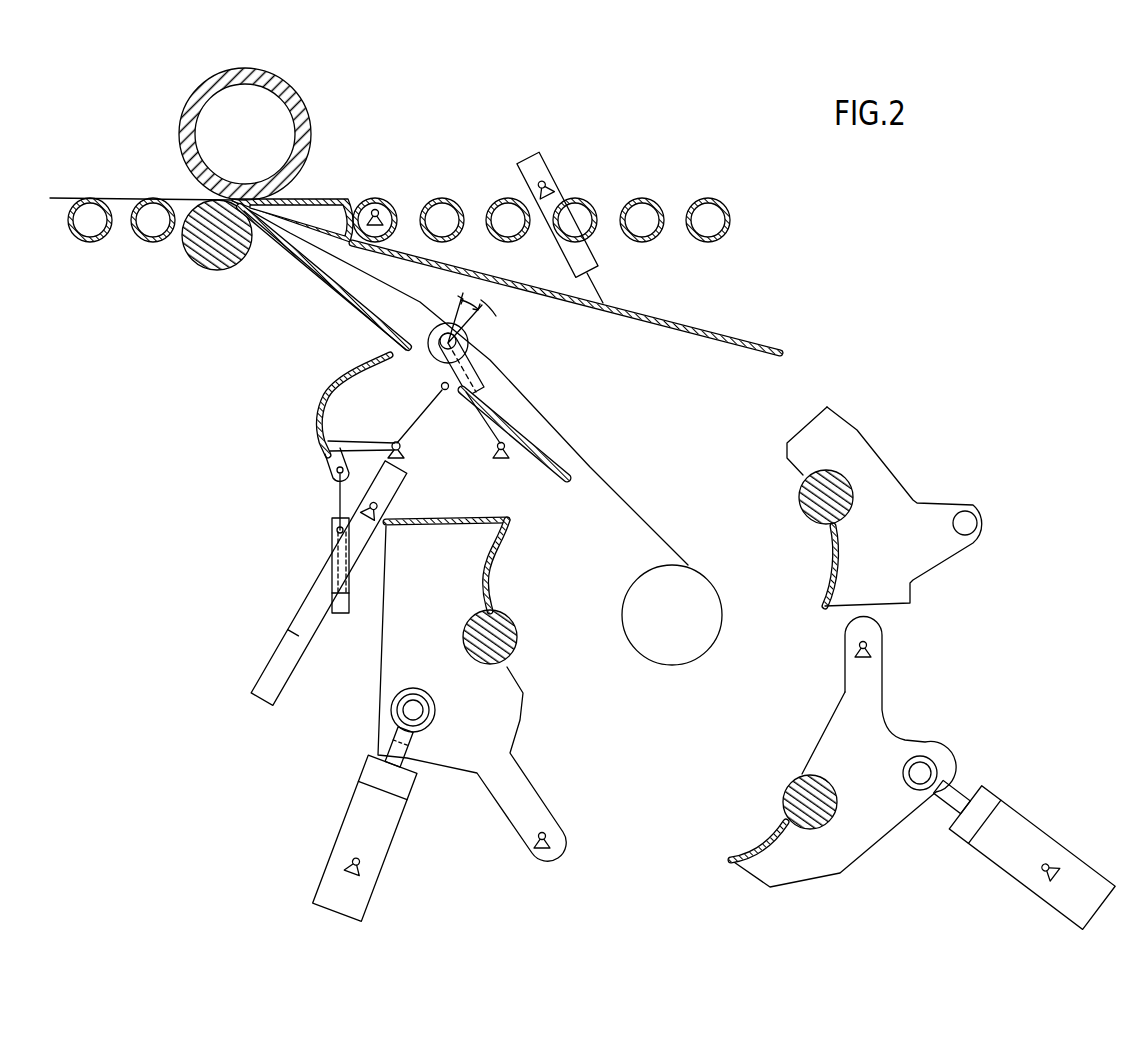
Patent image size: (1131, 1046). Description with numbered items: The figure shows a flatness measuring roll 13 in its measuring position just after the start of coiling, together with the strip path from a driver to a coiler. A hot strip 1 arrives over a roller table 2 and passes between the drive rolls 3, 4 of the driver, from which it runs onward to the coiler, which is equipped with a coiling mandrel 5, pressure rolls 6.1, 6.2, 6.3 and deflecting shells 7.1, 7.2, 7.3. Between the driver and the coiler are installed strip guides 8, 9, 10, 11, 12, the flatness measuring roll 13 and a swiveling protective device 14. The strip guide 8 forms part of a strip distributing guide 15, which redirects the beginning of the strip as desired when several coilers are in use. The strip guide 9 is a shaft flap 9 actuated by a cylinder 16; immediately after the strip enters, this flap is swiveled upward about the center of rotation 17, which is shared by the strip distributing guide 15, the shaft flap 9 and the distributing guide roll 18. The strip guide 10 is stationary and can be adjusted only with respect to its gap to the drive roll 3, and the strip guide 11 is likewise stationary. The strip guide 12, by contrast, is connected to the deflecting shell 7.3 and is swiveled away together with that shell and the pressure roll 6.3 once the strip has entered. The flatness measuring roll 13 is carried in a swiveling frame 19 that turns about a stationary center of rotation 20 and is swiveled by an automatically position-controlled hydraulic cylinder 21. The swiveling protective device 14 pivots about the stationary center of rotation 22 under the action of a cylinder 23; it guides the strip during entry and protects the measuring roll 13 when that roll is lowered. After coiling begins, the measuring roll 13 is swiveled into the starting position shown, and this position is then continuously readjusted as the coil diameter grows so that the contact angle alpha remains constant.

The hot strip 1 is at (60, 197).
The roller table 2 is at (90, 242).
The drive roll 3 is at (207, 255).
The drive roll 4 is at (299, 94).
The coiling mandrel 5 is at (655, 642).
The pressure roll 6.1 is at (825, 496).
The pressure roll 6.2 is at (808, 802).
The pressure roll 6.3 is at (505, 631).
The deflecting shell 7.1 is at (832, 562).
The deflecting shell 7.2 is at (764, 850).
The deflecting shell 7.3 is at (488, 568).
The strip guide 8 is at (330, 234).
The shaft flap 9 is at (543, 292).
The strip guide 10 is at (308, 275).
The strip guide 11 is at (545, 472).
The strip guide 12 is at (432, 518).
The flatness measuring roll 13 is at (437, 362).
The swiveling protective device 14 is at (350, 375).
The strip distributing guide 15 is at (330, 204).
The cylinder 16 is at (588, 258).
The center of rotation 17 is at (374, 210).
The distributing guide roll 18 is at (388, 204).
The swiveling frame 19 is at (480, 386).
The center of rotation 20 is at (495, 450).
The hydraulic cylinder 21 is at (290, 660).
The center of rotation 22 is at (392, 444).
The cylinder 23 is at (343, 616).